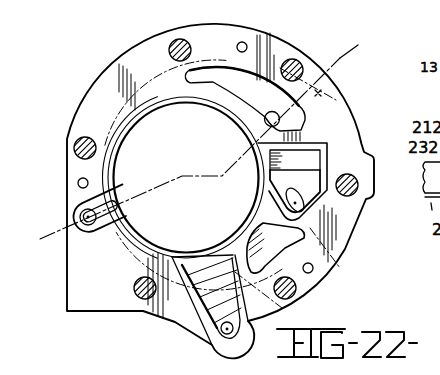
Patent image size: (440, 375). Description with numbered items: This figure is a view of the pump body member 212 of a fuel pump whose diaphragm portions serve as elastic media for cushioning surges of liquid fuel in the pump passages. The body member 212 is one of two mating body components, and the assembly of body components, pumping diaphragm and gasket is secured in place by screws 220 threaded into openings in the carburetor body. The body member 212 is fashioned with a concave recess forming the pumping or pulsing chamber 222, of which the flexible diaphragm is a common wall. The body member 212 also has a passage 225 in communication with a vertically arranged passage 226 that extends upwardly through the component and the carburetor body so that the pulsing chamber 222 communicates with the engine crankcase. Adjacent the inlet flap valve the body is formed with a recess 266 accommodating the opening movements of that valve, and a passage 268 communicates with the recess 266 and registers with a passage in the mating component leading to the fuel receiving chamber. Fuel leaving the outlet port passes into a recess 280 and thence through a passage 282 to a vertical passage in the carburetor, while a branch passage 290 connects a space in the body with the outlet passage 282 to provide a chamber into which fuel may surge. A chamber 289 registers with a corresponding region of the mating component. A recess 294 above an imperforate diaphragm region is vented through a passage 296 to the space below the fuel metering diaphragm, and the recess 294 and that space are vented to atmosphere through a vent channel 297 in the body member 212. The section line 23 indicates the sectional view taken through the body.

The body member 212 is at (118, 68).
The screws 220 is at (169, 49).
The pumping or pulsing chamber 222 is at (180, 161).
The passage 225 is at (118, 208).
The vertically arranged passage 226 is at (82, 234).
The section line 23- 23 is at (46, 228).
The recess 266 is at (323, 196).
The passage 268 is at (316, 209).
The recess 280 is at (173, 319).
The passage 282 is at (208, 341).
The chamber 289 is at (293, 248).
The branch passage 290 is at (283, 307).
The recess 294 is at (232, 88).
The passage 296 is at (264, 122).
The vent channel or passage 297 is at (318, 93).